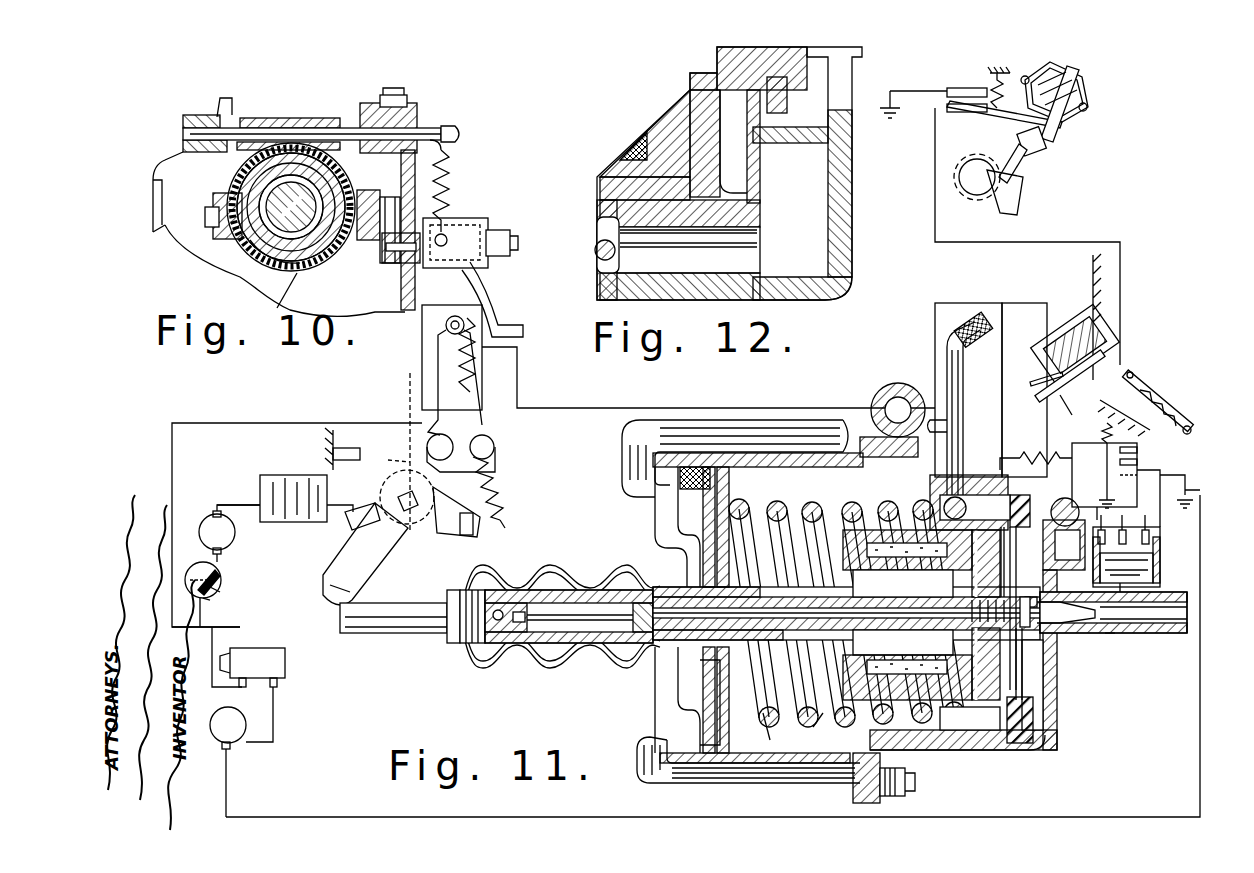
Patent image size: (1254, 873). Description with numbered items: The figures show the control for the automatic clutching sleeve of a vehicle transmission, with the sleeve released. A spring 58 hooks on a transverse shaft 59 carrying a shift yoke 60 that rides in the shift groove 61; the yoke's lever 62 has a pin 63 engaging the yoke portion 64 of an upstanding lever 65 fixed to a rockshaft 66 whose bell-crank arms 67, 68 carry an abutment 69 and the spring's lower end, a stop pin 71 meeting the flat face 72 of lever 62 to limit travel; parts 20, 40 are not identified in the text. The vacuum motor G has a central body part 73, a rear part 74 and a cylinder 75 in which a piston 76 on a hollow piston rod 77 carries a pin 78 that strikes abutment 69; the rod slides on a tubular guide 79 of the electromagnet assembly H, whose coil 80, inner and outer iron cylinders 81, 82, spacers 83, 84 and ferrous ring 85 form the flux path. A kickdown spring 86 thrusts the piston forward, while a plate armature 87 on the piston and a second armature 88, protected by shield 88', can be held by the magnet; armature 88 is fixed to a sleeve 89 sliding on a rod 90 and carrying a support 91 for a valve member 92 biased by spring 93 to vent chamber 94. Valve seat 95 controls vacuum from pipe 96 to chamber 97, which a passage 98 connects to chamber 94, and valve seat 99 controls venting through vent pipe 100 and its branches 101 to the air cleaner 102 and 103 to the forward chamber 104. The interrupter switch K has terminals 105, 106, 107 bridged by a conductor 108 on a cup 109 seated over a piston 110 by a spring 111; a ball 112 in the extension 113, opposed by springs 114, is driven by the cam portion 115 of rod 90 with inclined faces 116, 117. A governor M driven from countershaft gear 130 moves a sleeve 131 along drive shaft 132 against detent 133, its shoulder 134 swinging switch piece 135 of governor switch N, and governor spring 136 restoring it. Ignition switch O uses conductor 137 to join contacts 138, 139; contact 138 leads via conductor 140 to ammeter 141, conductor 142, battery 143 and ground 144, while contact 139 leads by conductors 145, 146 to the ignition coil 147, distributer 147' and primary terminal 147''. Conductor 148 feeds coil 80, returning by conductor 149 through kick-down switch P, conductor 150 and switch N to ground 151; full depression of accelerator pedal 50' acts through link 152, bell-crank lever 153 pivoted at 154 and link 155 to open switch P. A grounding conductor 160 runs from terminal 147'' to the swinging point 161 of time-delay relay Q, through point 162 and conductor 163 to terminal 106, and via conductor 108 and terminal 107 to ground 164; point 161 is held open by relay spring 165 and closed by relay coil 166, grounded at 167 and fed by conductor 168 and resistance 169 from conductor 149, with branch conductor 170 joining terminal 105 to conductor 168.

In FIG. 10, the shaft 20 is at (300, 245).
In FIG. 10, the gear 40 is at (275, 243).
In FIG. 10, the spring 58 is at (455, 165).
In FIG. 11, the spring 58 is at (500, 490).
In FIG. 10, the transverse shaft 59 is at (430, 128).
In FIG. 10, the shift yoke 60 is at (222, 183).
In FIG. 10, the shift groove 61 is at (265, 258).
In FIG. 11, the forwardly extending lever 62 is at (445, 365).
In FIG. 10, the lateral pin 63 is at (372, 192).
In FIG. 11, the lateral pin 63 is at (495, 440).
In FIG. 11, the yoke portion 64 is at (430, 425).
In FIG. 11, the upstanding lever 65 is at (476, 470).
In FIG. 10, the rockshaft 66 is at (395, 262).
In FIG. 11, the rockshaft 66 is at (430, 520).
In FIG. 11, the lever arm 67 is at (340, 555).
In FIG. 10, the lever arm 68 is at (450, 268).
In FIG. 11, the lever arm 68 is at (450, 532).
In FIG. 11, the actuating abutment portion 69 is at (333, 600).
In FIG. 10, the stop pin 71 is at (380, 240).
In FIG. 11, the stop pin 71 is at (357, 448).
In FIG. 11, the forward flat face 72 is at (382, 453).
In FIG. 12, the central body part 73 is at (612, 297).
In FIG. 11, the central body part 73 is at (962, 745).
In FIG. 12, the rear part 74 is at (833, 226).
In FIG. 11, the rear part 74 is at (1050, 673).
In FIG. 11, the forward cylindrical closure part 75 is at (742, 770).
In FIG. 11, the piston 76 is at (712, 466).
In FIG. 11, the piston rod 77 is at (567, 593).
In FIG. 11, the abutment leader rod 78 is at (388, 616).
In FIG. 11, the tubular support guide 79 is at (645, 645).
In FIG. 11, the coil 80 is at (895, 708).
In FIG. 11, the inner flux-directing iron cylinder 81 is at (907, 615).
In FIG. 11, the outer flux-directing iron cylinder 82 is at (840, 527).
In FIG. 11, the non-magnetic spacer 83 is at (817, 730).
In FIG. 11, the non-magnetic spacer 84 is at (970, 718).
In FIG. 11, the ferrous ring 85 is at (850, 540).
In FIG. 11, the kickdown spring 86 is at (777, 734).
In FIG. 11, the plate armature 87 is at (740, 522).
In FIG. 11, the second plate armature 88 is at (1053, 664).
In FIG. 11, the shield 88' is at (1051, 720).
In FIG. 11, the sleeve 89 is at (1040, 628).
In FIG. 11, the switch operator rod 90 is at (560, 640).
In FIG. 11, the support 91 is at (1016, 558).
In FIG. 11, the valve member 92 is at (1013, 495).
In FIG. 11, the spring 93 is at (970, 640).
In FIG. 11, the cylinder chamber 94 is at (812, 762).
In FIG. 11, the valve seat 95 is at (1016, 545).
In FIG. 11, the pipe 96 is at (1050, 540).
In FIG. 11, the chamber 97 is at (1045, 683).
In FIG. 12, the passage 98 is at (695, 262).
In FIG. 11, the valve seat 99 is at (960, 470).
In FIG. 11, the vent pipe 100 is at (900, 493).
In FIG. 11, the branch 101 is at (963, 380).
In FIG. 11, the air cleaner 102 is at (983, 318).
In FIG. 11, the second branch 103 is at (818, 420).
In FIG. 11, the cylinder chamber 104 is at (660, 705).
In FIG. 11, the switch terminal 105 is at (1075, 548).
In FIG. 11, the switch terminal 106 is at (1160, 510).
In FIG. 11, the switch terminal 107 is at (1186, 500).
In FIG. 11, the conductor 108 is at (1160, 548).
In FIG. 11, the cup 109 is at (1153, 577).
In FIG. 11, the piston 110 is at (1148, 633).
In FIG. 11, the spring 111 is at (1100, 572).
In FIG. 11, the ball 112 is at (1118, 634).
In FIG. 11, the rear cylindrical extension 113 is at (1185, 633).
In FIG. 11, the springs 114 is at (1117, 550).
In FIG. 11, the cam portion 115 is at (1108, 633).
In FIG. 11, the inclined face 116 is at (1120, 606).
In FIG. 11, the inclined face 117 is at (1030, 597).
In FIG. 11, the countershaft gear 130 is at (980, 160).
In FIG. 11, the sleeve 131 is at (1063, 127).
In FIG. 11, the drive shaft 132 is at (1030, 170).
In FIG. 11, the detent 133 is at (1043, 148).
In FIG. 11, the shoulder 134 is at (1055, 133).
In FIG. 11, the swinging switch piece 135 is at (1010, 118).
In FIG. 11, the governor spring 136 is at (1077, 68).
In FIG. 11, the conductor 137 is at (222, 592).
In FIG. 11, the contact 138 is at (222, 561).
In FIG. 11, the contact 139 is at (207, 599).
In FIG. 11, the conductor 140 is at (212, 558).
In FIG. 11, the ammeter 141 is at (207, 518).
In FIG. 11, the conductor 142 is at (240, 505).
In FIG. 11, the storage battery 143 is at (291, 475).
In FIG. 11, the ground 144 is at (342, 527).
In FIG. 11, the conductor 145 is at (212, 626).
In FIG. 11, the conductor 146 is at (215, 645).
In FIG. 11, the coil 147 is at (276, 667).
In FIG. 11, the distributer 147' is at (270, 718).
In FIG. 11, the primary terminal 147'' is at (258, 781).
In FIG. 11, the second conductor 148 is at (172, 478).
In FIG. 11, the conductor 149 is at (1010, 303).
In FIG. 11, the conductor 150 is at (1020, 243).
In FIG. 11, the ground 151 is at (890, 120).
In FIG. 11, the link 152 is at (1128, 365).
In FIG. 11, the bell-crank lever 153 is at (1055, 390).
In FIG. 11, the pivot 154 is at (1073, 376).
In FIG. 11, the link 155 is at (1063, 410).
In FIG. 11, the grounding conductor 160 is at (296, 815).
In FIG. 11, the swinging point 161 is at (1138, 450).
In FIG. 11, the relay point 162 is at (1140, 462).
In FIG. 11, the conductor 163 is at (1140, 476).
In FIG. 11, the ground 164 is at (1193, 508).
In FIG. 11, the relay spring 165 is at (1113, 433).
In FIG. 11, the relay coil 166 is at (1097, 495).
In FIG. 11, the ground 167 is at (1120, 497).
In FIG. 11, the conductor 168 is at (962, 410).
In FIG. 11, the resistance 169 is at (1030, 447).
In FIG. 11, the branch conductor 170 is at (1050, 462).
In FIG. 11, the accelerator pedal 50' is at (1177, 401).
In FIG. 11, the pressure fluid operated motor G is at (775, 453).
In FIG. 12, the electromagnet assembly H is at (620, 153).
In FIG. 11, the electromagnet assembly H is at (898, 437).
In FIG. 11, the interrupter switch K is at (1160, 563).
In FIG. 11, the governor M is at (1090, 82).
In FIG. 11, the governor switch N is at (970, 88).
In FIG. 11, the ignition switch O is at (224, 580).
In FIG. 11, the kick-down switch P is at (1045, 343).
In FIG. 11, the time-delay relay Q is at (1192, 430).